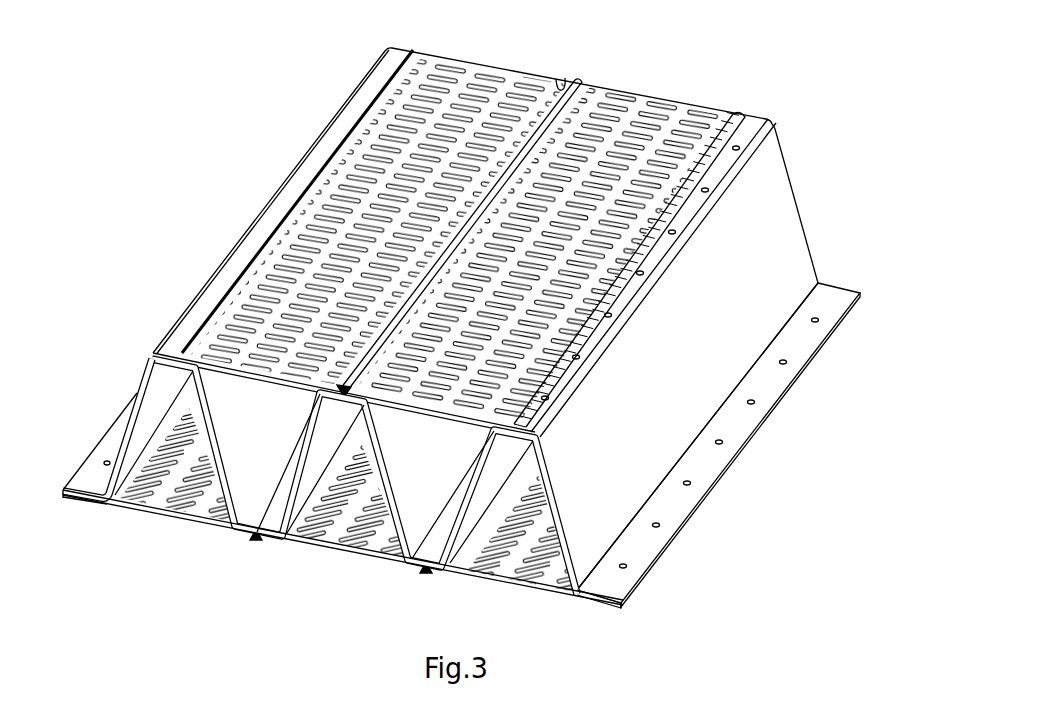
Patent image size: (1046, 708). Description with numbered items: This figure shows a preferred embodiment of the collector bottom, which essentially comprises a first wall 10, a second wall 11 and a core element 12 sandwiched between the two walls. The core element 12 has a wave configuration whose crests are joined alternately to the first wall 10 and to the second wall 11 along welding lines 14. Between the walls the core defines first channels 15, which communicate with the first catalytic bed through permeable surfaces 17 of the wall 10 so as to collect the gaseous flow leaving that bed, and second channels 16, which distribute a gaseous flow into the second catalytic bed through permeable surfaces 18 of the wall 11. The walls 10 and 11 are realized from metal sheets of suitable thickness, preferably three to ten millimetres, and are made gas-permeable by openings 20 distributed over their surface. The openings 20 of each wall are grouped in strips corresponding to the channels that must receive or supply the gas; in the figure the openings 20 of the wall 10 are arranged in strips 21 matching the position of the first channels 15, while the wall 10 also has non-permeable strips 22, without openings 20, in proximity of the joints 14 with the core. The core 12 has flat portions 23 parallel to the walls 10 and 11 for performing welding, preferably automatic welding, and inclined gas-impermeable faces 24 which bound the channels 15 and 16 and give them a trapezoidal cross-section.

The first wall 10 is at (293, 228).
The second wall 11 is at (564, 594).
The core element 12 is at (811, 216).
The welding lines 14 is at (533, 140).
The first channels 15 is at (239, 408).
The second channels 16 is at (146, 451).
The permeable surfaces 17 is at (399, 133).
The permeable surfaces 18 is at (314, 565).
The openings 20 is at (603, 118).
The strips 21 is at (692, 80).
The non-permeable strips 22 is at (560, 85).
The flat portions 23 is at (426, 570).
The inclined gas-impermeable faces 24 is at (642, 418).